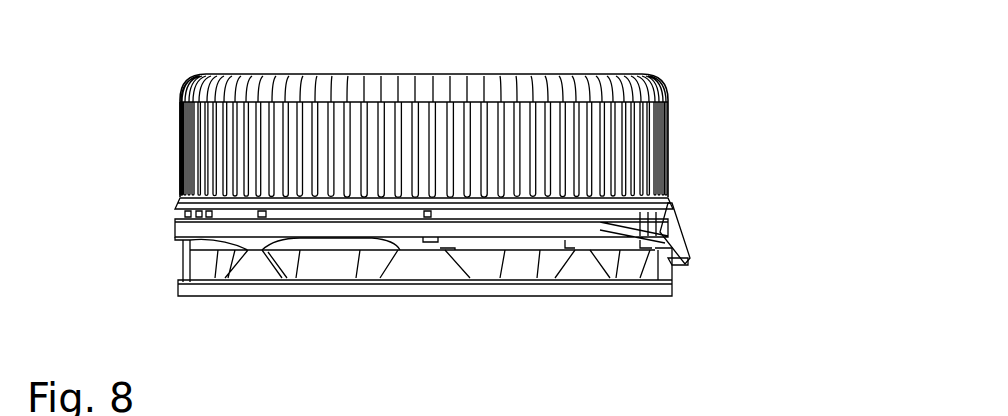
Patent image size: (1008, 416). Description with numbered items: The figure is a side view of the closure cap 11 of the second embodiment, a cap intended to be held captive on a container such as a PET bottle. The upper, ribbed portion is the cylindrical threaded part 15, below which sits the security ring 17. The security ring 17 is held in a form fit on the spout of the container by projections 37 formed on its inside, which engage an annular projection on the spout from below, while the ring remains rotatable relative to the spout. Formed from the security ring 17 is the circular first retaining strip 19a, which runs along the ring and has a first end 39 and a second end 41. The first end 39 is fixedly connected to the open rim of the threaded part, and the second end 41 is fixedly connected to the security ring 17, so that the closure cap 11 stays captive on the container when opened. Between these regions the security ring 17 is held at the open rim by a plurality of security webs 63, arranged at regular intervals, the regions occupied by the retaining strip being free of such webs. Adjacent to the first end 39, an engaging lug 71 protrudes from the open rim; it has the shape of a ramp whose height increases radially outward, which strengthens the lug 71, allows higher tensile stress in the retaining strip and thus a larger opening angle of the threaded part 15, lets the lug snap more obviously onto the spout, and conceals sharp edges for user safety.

The closure cap 11 is at (672, 70).
The cylindrical threaded part 15 is at (182, 128).
The security ring 17 is at (195, 265).
The first retaining strip 19a is at (505, 228).
The projections 37 is at (622, 266).
The first end 39 is at (686, 232).
The second end 41 is at (432, 241).
The security webs 63 is at (188, 216).
The engaging lug 71 is at (688, 258).